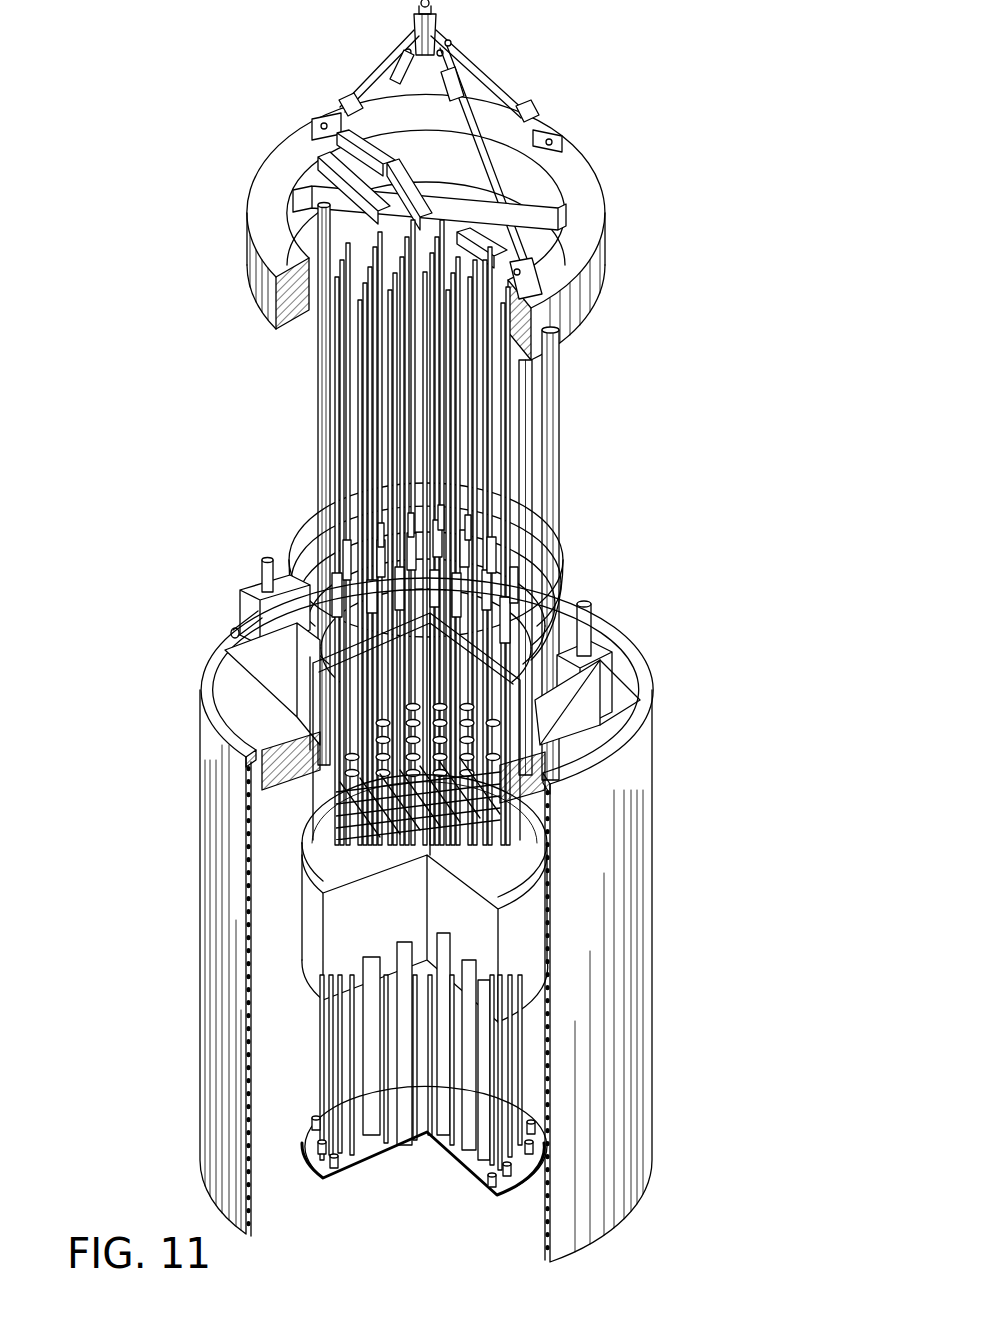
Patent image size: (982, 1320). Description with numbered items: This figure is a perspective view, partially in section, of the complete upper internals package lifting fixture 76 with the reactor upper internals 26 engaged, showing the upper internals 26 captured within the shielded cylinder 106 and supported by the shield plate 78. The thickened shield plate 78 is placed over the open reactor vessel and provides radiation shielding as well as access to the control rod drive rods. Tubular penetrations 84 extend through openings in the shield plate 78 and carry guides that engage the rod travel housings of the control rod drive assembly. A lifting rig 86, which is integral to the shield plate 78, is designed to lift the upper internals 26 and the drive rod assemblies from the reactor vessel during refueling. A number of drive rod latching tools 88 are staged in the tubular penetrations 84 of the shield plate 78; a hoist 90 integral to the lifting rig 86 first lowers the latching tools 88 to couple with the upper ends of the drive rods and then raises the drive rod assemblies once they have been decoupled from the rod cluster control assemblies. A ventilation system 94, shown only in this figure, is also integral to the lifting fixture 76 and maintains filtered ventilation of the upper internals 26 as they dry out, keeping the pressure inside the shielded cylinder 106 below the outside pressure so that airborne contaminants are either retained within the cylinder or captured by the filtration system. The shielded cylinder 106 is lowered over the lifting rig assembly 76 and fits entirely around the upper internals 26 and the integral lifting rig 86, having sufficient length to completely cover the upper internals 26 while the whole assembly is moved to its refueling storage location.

The upper internals 26 is at (530, 942).
The lifting fixture 76 is at (567, 374).
The shield plate 78 is at (622, 684).
The tubular penetrations 84 is at (312, 522).
The lifting rig 86 is at (604, 138).
The drive rod latching tools 88 is at (334, 422).
The hoist 90 is at (398, 178).
The ventilation system 94 is at (244, 600).
The shielded cylinder 106 is at (214, 972).